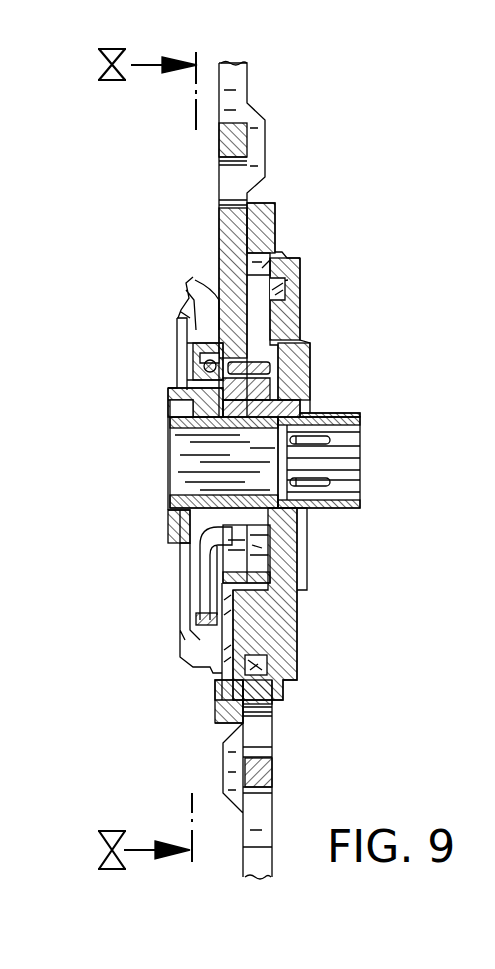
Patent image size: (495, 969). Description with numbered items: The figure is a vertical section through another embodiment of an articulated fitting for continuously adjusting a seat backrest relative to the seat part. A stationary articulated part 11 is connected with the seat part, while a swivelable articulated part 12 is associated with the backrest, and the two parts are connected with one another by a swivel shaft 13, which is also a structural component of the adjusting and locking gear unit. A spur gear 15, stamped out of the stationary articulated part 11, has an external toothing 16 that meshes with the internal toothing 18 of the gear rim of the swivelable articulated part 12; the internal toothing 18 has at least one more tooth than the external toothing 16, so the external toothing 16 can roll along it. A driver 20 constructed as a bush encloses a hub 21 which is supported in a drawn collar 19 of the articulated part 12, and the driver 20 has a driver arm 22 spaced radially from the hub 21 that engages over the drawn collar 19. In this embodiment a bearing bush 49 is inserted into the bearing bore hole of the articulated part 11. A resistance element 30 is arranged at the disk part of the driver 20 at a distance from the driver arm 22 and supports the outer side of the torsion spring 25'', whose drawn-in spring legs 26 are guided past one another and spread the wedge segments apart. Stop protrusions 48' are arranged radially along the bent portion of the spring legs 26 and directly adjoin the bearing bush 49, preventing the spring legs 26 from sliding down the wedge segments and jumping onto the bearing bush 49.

The stationary articulated part 11 is at (238, 100).
The swivelable articulated part 12 is at (256, 820).
The swivel shaft 13 is at (381, 439).
The spur gear 15 is at (253, 625).
The external toothing 16 is at (302, 278).
The internal toothing 18 is at (260, 270).
The drawn collar 19 is at (258, 413).
The driver 20 is at (156, 502).
The hub 21 is at (230, 490).
The driver arm 22 is at (270, 384).
The torsion spring 25'' is at (160, 345).
The spring legs 26 is at (203, 565).
The resistance element 30 is at (188, 320).
The stop protrusions 48' is at (309, 554).
The bearing bush 49 is at (273, 373).